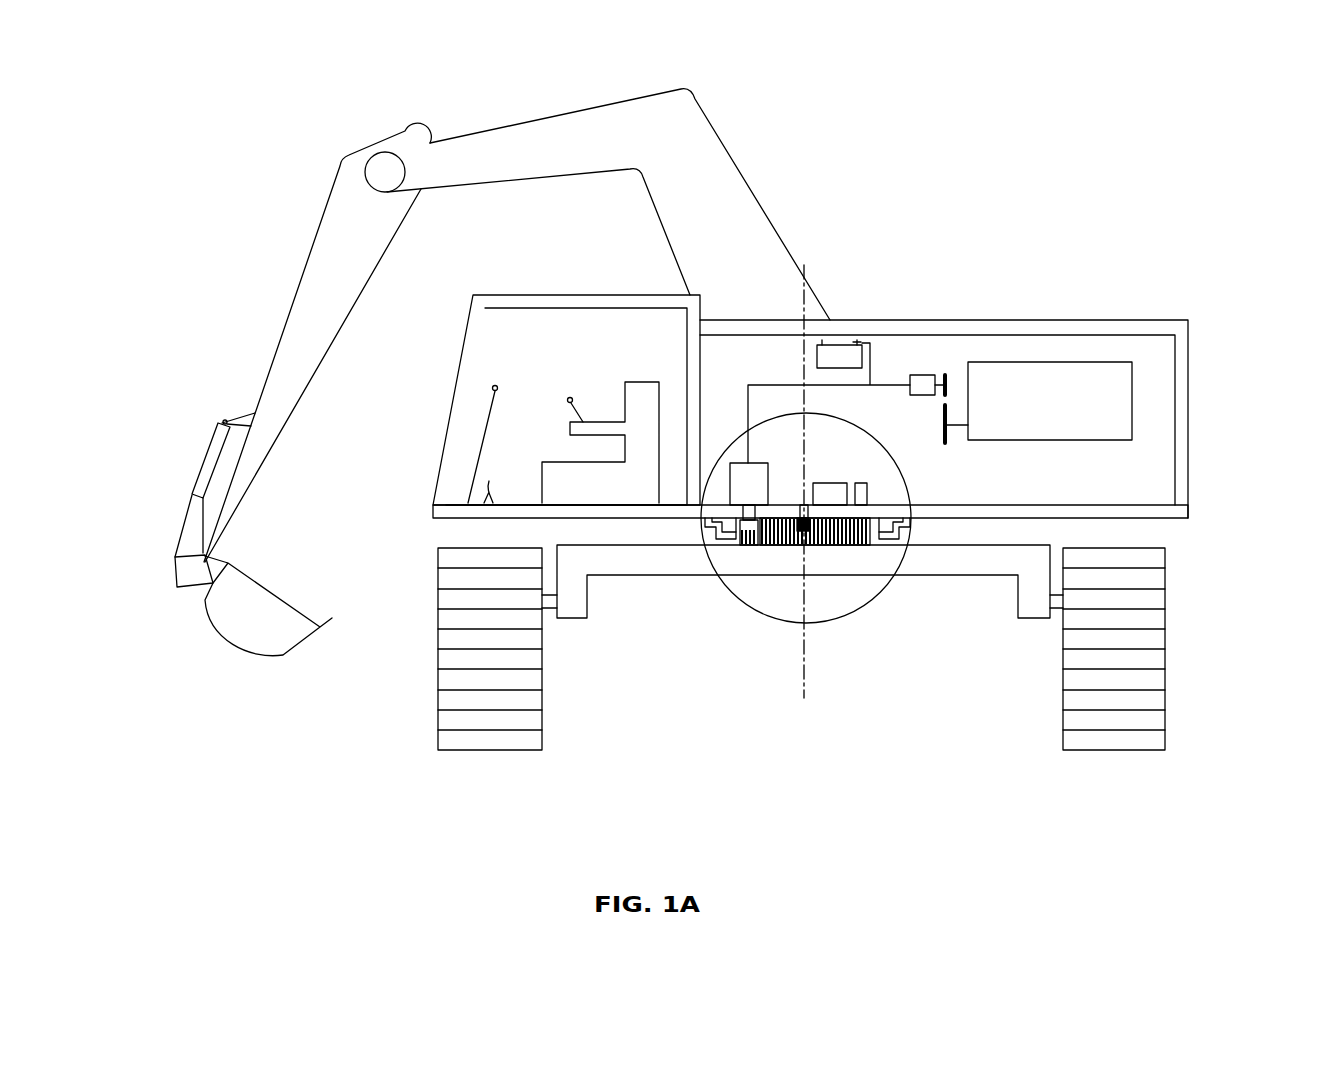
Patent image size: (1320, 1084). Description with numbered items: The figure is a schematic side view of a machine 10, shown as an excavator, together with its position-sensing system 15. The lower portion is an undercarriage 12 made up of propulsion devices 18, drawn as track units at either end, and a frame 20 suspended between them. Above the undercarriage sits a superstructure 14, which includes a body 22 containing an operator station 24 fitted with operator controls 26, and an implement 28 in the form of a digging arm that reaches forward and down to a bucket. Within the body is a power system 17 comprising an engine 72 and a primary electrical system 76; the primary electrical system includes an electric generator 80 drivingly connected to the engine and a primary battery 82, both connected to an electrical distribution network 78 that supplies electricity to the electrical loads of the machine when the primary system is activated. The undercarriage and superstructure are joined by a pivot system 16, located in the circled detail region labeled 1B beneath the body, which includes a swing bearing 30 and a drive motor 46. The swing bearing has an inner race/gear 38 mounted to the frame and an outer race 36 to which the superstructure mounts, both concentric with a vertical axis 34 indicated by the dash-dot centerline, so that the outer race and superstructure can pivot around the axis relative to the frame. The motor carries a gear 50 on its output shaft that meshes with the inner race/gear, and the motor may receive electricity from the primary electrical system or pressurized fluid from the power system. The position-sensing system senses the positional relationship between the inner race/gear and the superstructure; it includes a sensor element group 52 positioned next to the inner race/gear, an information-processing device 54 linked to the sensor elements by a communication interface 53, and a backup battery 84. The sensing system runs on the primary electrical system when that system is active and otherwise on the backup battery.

The machine 10 is at (984, 198).
The undercarriage 12 is at (391, 683).
The superstructure 14 is at (1208, 374).
The position-sensing system 15 is at (874, 481).
The pivot system 16 is at (928, 537).
The power system 17 is at (1016, 348).
The propulsion devices 18 is at (547, 678).
The frame 20 is at (608, 575).
The body 22 is at (1127, 322).
The operator station 24 is at (592, 293).
The operator controls 26 is at (518, 393).
The implement 28 is at (492, 183).
The swing bearing 30 is at (687, 527).
The axis 34 is at (802, 668).
The outer race 36 is at (890, 521).
The inner race/gear 38 is at (837, 545).
The drive motor 46 is at (738, 494).
The gear 50 is at (745, 546).
The sensor element group 52 is at (802, 518).
The communication interface 53 is at (809, 512).
The information-processing device 54 is at (833, 483).
The engine 72 is at (1037, 414).
The primary electrical system 76 is at (887, 368).
The electrical distribution network 78 is at (763, 384).
The electric generator 80 is at (927, 382).
The primary battery 82 is at (833, 356).
The backup battery 84 is at (863, 483).
The detail view of FIG. 1B is at (877, 600).